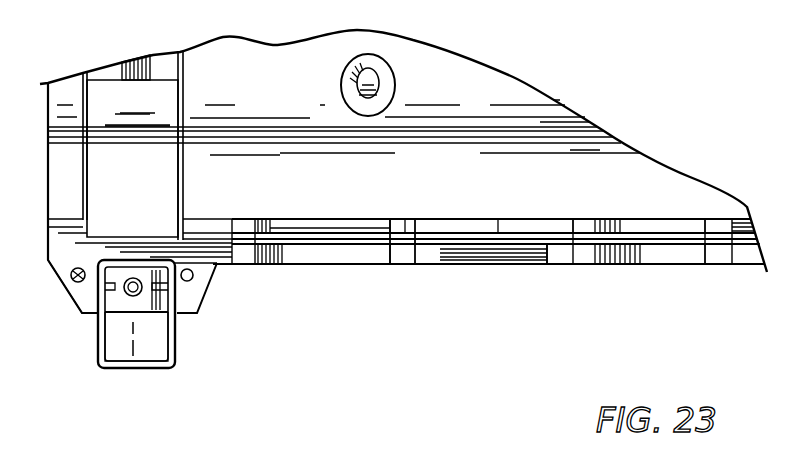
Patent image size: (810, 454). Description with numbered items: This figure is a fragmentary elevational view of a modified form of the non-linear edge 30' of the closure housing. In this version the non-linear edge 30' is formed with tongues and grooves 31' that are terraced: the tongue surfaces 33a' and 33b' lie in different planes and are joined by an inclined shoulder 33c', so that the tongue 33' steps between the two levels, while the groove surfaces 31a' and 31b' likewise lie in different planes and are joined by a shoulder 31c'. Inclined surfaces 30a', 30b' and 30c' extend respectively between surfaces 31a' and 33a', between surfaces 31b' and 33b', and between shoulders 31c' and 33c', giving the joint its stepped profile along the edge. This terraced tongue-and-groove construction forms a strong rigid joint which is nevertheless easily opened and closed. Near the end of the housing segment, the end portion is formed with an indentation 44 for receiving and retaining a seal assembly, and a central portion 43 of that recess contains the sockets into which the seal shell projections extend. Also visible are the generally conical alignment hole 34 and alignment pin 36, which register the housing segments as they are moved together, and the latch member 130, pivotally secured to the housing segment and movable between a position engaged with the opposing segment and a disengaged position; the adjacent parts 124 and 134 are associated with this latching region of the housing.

The central portion 43 is at (163, 70).
The indentation 44 is at (162, 100).
The surface 31a' is at (330, 203).
The shoulder 31c' is at (402, 211).
The surface 33a' is at (489, 200).
The tongue surface 33' is at (527, 200).
The inclined shoulder 33c' is at (503, 218).
The inclined surface 30c' is at (632, 207).
The alignment pin 36 is at (193, 275).
The surface 31b' is at (322, 275).
The tongue / groove 31' is at (521, 283).
The inclined surface 30a' is at (394, 268).
The non-linear edge 30' is at (481, 281).
The surface 33b' is at (532, 284).
The inclined surface 30b' is at (631, 276).
The alignment hole 34 is at (88, 278).
The mounting tab 124 is at (190, 293).
The latch member 130 is at (96, 345).
The bracket lower portion 134 is at (173, 347).